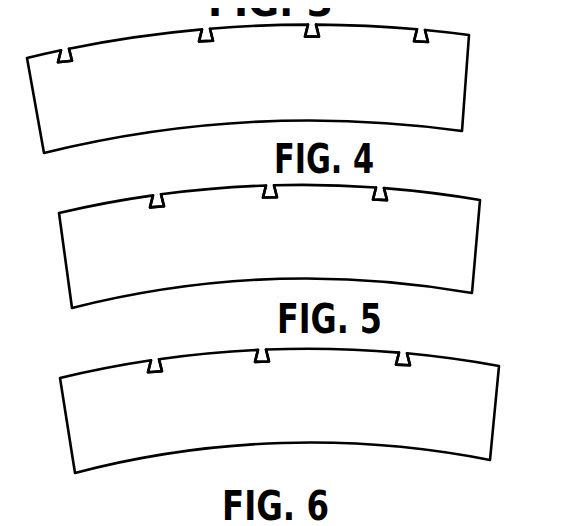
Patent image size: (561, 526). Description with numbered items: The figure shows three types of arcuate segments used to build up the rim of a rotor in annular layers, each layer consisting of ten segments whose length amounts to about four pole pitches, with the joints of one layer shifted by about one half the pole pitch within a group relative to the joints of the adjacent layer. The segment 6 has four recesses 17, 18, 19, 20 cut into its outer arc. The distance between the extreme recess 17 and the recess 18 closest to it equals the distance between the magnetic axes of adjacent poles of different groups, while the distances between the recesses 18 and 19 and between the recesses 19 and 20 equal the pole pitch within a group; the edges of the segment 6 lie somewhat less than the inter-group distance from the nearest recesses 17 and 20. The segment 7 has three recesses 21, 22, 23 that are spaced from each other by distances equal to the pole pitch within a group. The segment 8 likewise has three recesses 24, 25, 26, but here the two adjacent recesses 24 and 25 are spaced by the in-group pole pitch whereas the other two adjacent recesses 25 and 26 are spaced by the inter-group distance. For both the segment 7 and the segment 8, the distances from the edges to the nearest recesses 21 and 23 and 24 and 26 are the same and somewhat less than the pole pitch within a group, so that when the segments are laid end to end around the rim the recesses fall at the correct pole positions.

In FIG. 4, the segment 6 is at (457, 78).
In FIG. 5, the segment 7 is at (465, 235).
In FIG. 6, the segment 8 is at (487, 402).
In FIG. 4, the recess 17 is at (63, 46).
In FIG. 4, the recess 18 is at (200, 23).
In FIG. 4, the recess 19 is at (311, 21).
In FIG. 4, the recess 20 is at (420, 26).
In FIG. 5, the recess 21 is at (155, 192).
In FIG. 5, the recess 22 is at (268, 183).
In FIG. 5, the recess 23 is at (378, 185).
In FIG. 6, the recess 24 is at (153, 357).
In FIG. 6, the recess 25 is at (260, 347).
In FIG. 6, the recess 26 is at (401, 350).